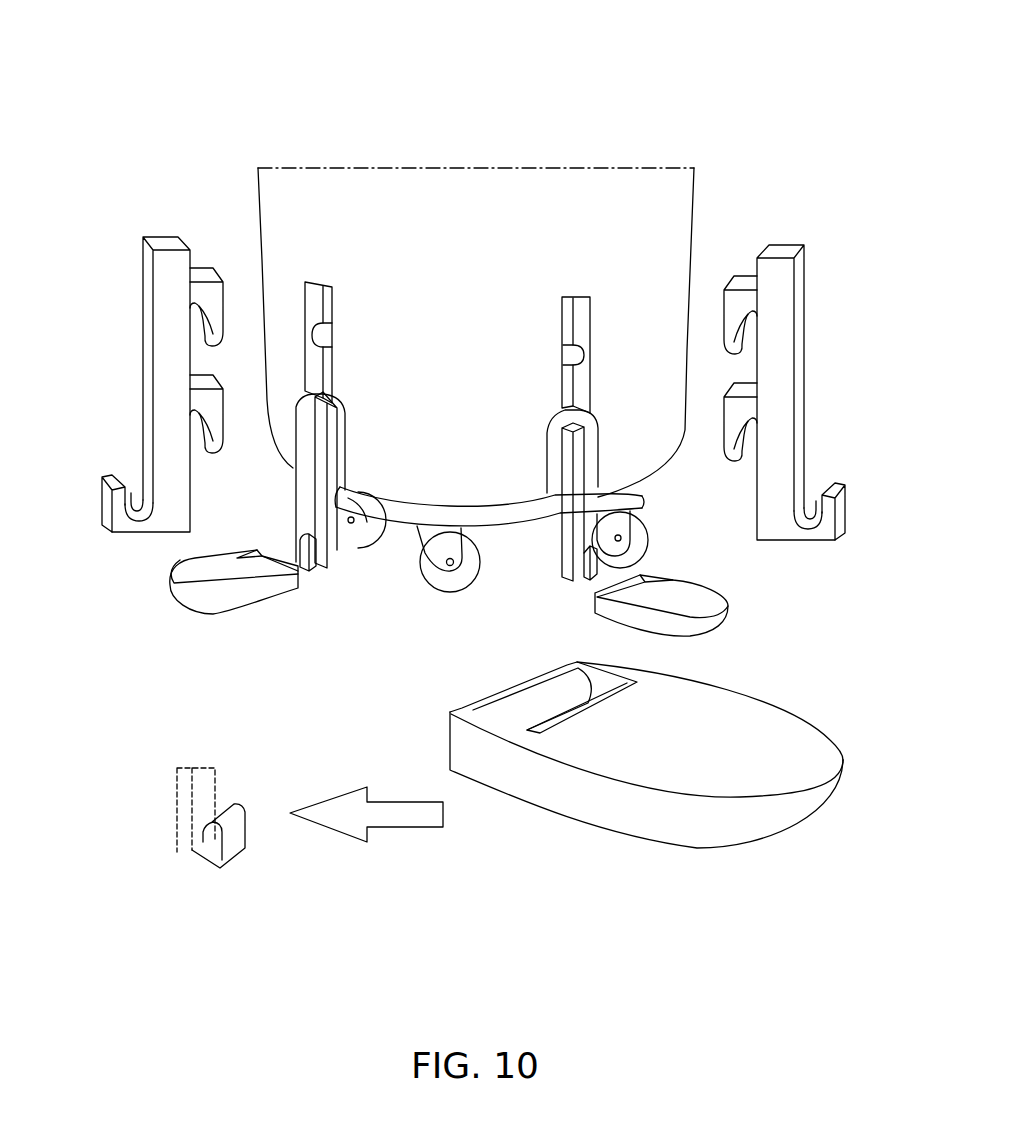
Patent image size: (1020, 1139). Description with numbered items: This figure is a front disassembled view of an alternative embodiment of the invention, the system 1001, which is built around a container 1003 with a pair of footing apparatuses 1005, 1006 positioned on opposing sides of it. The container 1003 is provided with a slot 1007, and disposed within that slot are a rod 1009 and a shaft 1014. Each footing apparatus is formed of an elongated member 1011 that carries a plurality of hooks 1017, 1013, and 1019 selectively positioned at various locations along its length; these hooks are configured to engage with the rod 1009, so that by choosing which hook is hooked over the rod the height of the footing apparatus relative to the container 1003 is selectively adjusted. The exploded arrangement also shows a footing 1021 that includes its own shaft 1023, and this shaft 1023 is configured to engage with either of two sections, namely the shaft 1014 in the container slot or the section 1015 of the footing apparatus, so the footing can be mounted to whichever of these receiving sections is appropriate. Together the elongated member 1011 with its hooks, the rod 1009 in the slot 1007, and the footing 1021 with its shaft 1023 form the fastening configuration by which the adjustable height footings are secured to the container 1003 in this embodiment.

The system 1001 is at (162, 56).
The container 1003 is at (258, 183).
The footing apparatus 1005 is at (68, 334).
The footing apparatus 1006 is at (856, 332).
The slot 1007 is at (305, 307).
The rod 1009 is at (317, 323).
The elongated member 1011 is at (153, 412).
The hook 1013 is at (100, 507).
The shaft 1014 is at (193, 848).
The section 1015 is at (126, 516).
The hook 1017 is at (218, 442).
The hook 1019 is at (220, 304).
The footing 1021 is at (218, 607).
The shaft 1023 is at (531, 694).